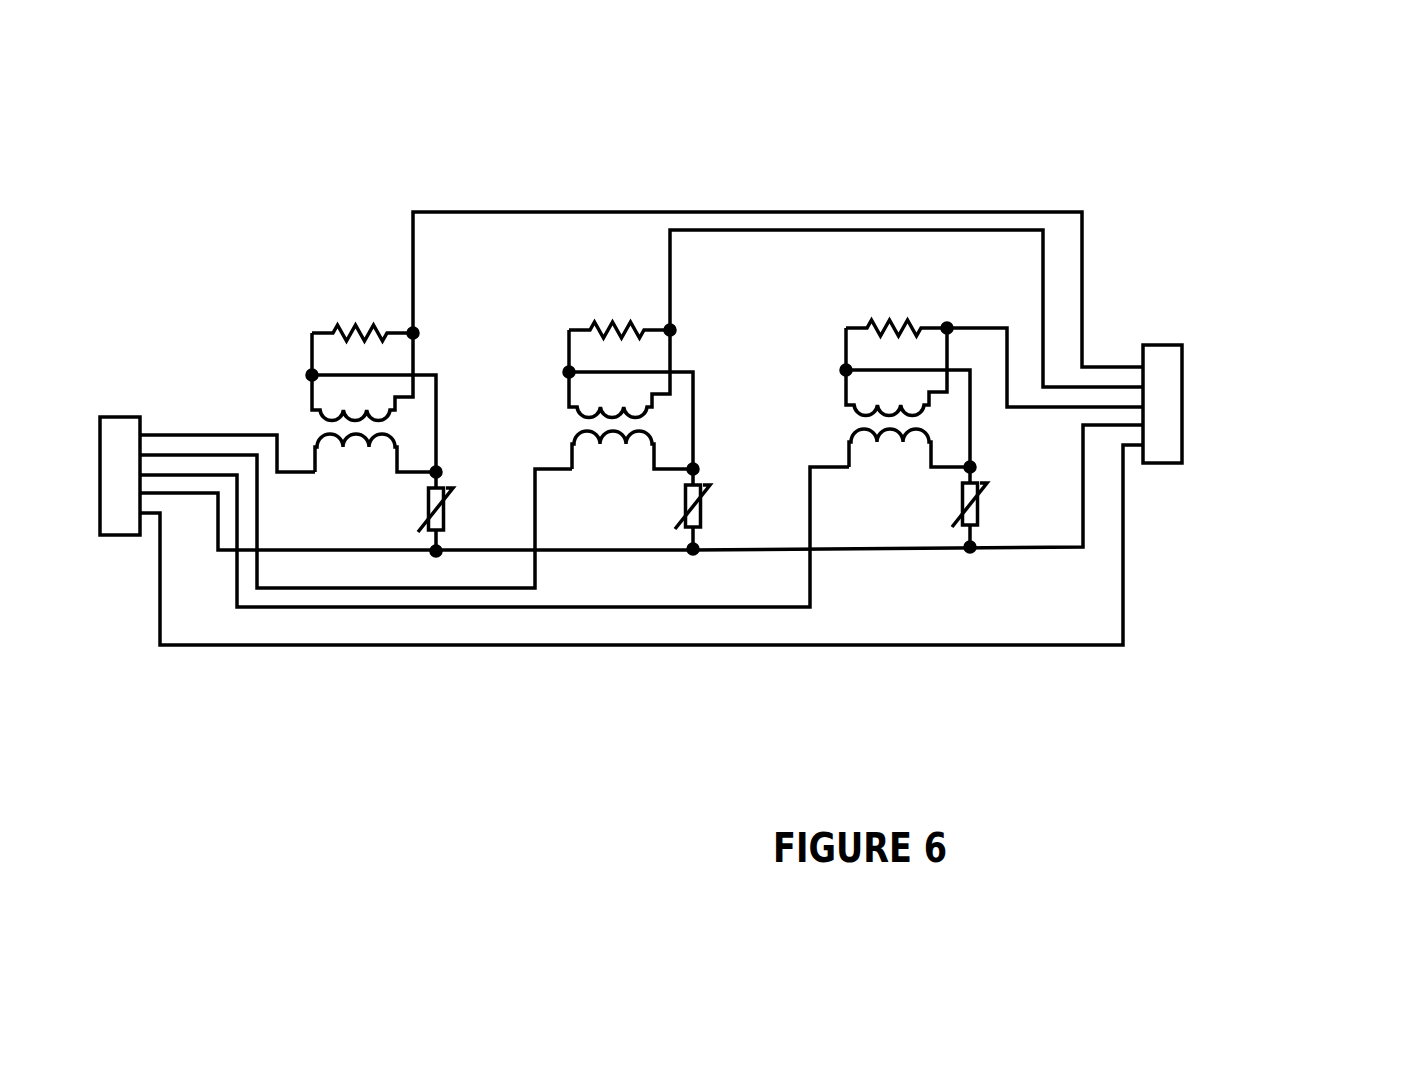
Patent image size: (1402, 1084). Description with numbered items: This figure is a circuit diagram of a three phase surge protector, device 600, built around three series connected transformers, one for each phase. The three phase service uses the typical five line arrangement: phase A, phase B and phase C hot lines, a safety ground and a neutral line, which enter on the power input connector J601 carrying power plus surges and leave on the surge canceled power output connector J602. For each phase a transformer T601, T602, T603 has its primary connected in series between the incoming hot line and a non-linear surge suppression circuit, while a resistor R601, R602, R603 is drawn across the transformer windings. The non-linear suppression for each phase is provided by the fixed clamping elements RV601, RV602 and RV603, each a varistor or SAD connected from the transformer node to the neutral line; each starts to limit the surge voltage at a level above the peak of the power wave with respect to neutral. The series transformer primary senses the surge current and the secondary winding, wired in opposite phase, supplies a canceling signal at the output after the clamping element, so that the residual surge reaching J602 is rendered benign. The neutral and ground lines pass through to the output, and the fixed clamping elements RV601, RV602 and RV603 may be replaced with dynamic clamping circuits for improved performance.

The device 600 is at (1158, 253).
The power input connector J601 is at (110, 495).
The surge canceled power output connector J602 is at (1168, 423).
The resistor R601 is at (362, 335).
The resistor R602 is at (619, 332).
The resistor R603 is at (896, 330).
The transformer T601 is at (374, 414).
The transformer T602 is at (631, 411).
The transformer T603 is at (908, 409).
The fixed clamping element RV601 is at (395, 511).
The fixed clamping element RV602 is at (652, 509).
The fixed clamping element RV603 is at (929, 507).